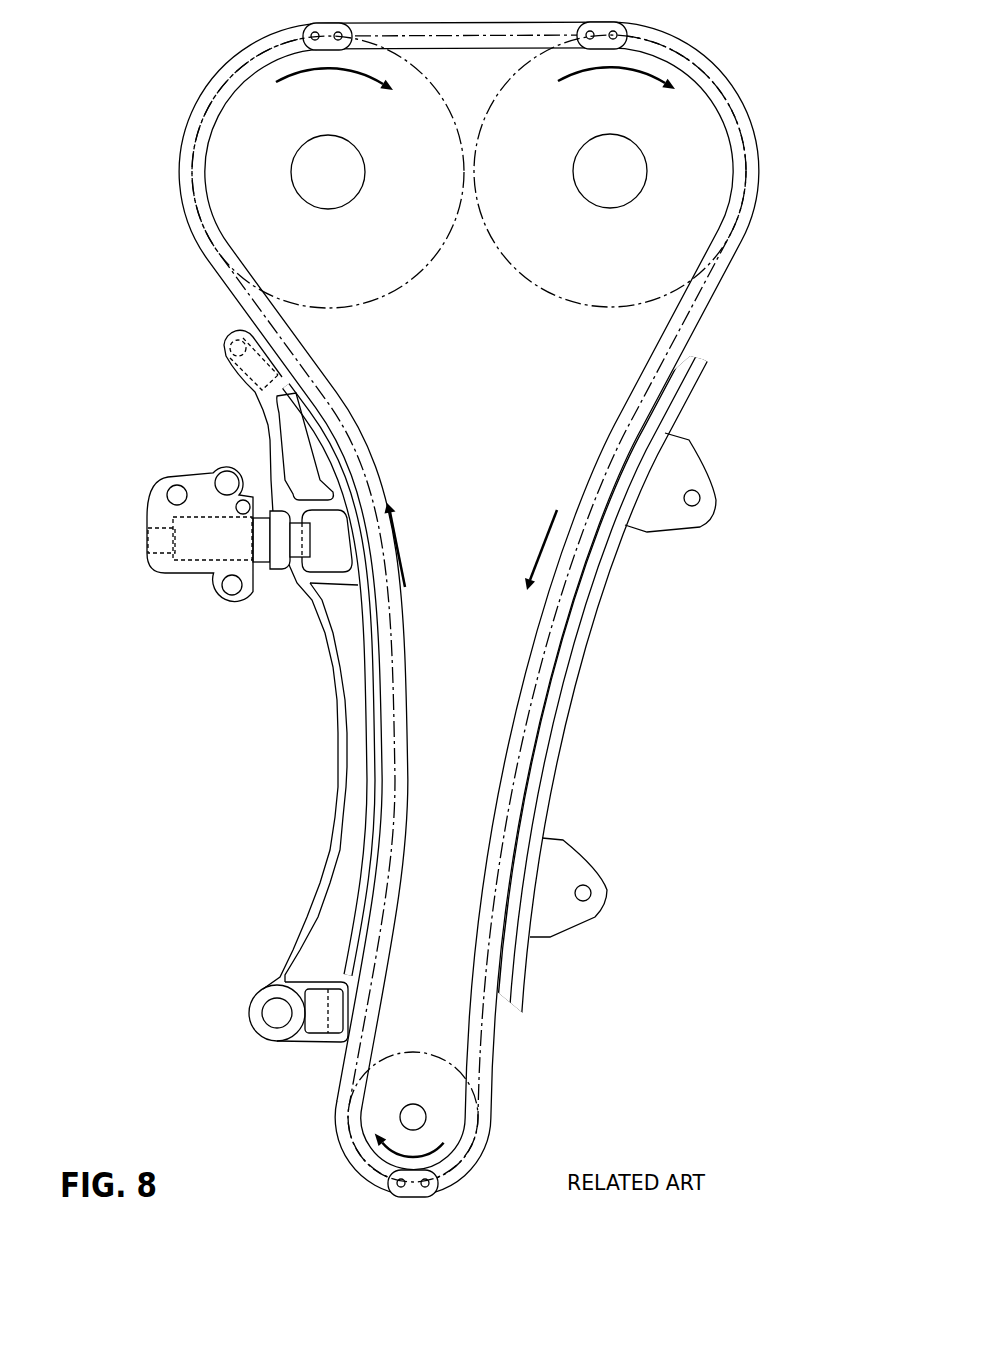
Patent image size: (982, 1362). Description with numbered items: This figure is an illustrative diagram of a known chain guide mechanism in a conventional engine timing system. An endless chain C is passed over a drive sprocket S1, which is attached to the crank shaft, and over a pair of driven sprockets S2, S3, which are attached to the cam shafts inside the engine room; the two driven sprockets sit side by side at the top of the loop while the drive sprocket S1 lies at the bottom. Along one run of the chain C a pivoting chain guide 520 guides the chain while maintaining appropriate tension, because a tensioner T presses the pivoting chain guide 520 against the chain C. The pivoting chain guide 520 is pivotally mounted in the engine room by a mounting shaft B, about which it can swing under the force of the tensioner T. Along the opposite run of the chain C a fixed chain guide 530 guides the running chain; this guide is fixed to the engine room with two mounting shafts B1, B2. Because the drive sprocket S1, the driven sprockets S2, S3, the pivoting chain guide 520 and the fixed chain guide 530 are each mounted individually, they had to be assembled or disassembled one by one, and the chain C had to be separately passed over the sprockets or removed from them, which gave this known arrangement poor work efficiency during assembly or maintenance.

The drive sprocket S1 is at (447, 1127).
The driven sprocket S2 is at (247, 128).
The driven sprocket S3 is at (688, 128).
The endless chain C is at (683, 302).
The tensioner T is at (147, 517).
The pivoting chain guide 520 is at (357, 786).
The fixed chain guide 530 is at (542, 785).
The mounting shaft B is at (270, 1014).
The mounting shaft B1 is at (700, 498).
The mounting shaft B2 is at (591, 893).